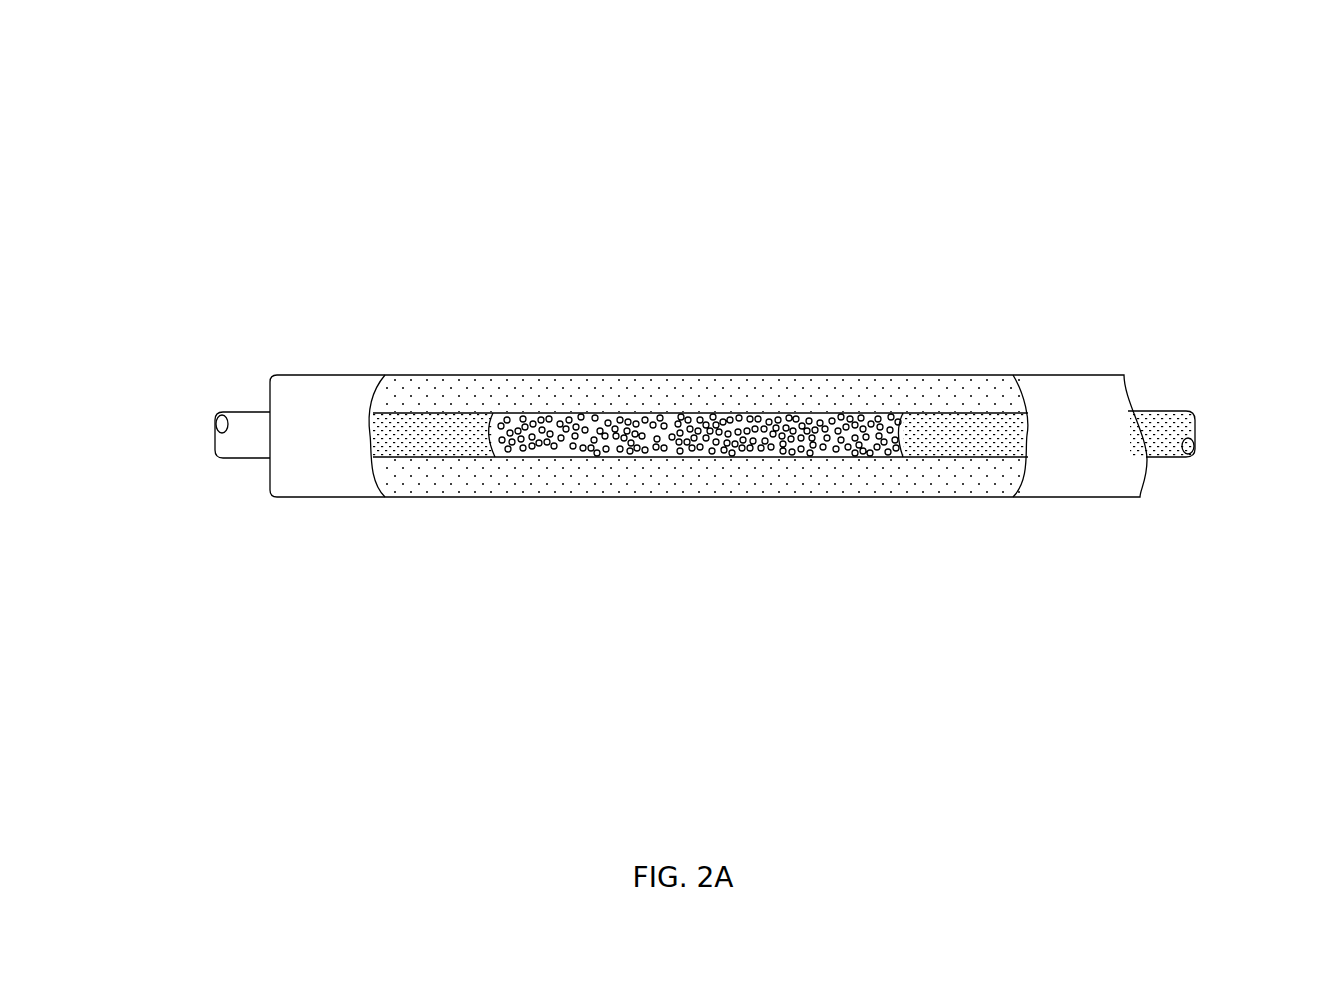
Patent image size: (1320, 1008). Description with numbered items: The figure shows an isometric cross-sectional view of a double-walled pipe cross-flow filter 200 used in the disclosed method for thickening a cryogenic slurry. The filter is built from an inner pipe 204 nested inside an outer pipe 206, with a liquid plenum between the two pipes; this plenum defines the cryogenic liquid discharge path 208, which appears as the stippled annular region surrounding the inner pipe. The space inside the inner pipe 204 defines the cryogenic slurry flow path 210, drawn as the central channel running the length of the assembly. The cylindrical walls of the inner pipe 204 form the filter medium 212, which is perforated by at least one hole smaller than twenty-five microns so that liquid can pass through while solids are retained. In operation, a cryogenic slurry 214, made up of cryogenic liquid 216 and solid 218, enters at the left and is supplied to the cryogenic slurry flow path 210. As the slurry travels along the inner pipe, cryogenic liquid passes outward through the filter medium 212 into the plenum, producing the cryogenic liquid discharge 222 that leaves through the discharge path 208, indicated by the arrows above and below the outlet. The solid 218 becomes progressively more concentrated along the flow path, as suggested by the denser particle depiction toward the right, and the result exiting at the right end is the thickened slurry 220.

The double-walled pipe cross-flow filter 200 is at (206, 94).
The inner pipe 204 is at (243, 410).
The outer pipe 206 is at (350, 375).
The cryogenic liquid discharge path 208 is at (678, 382).
The cryogenic slurry flow path 210 is at (575, 417).
The filter medium 212 is at (1008, 420).
The cryogenic slurry 214 is at (205, 435).
The cryogenic liquid 216 is at (770, 390).
The solid 218 is at (842, 418).
The thickened slurry 220 is at (1212, 437).
The cryogenic liquid discharge 222 is at (1153, 388).